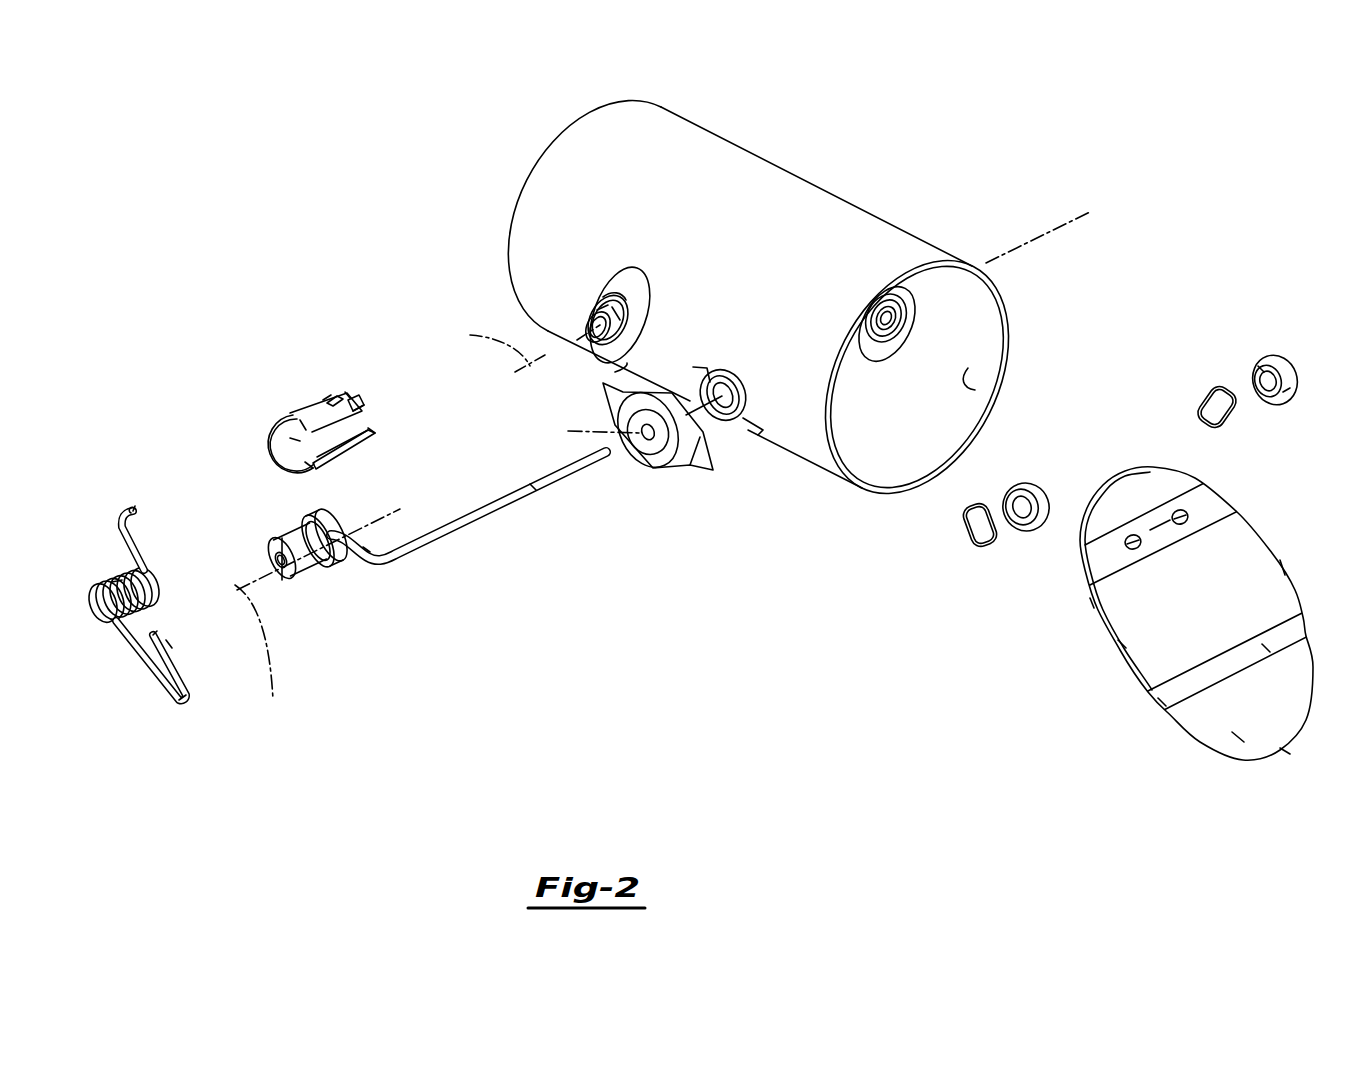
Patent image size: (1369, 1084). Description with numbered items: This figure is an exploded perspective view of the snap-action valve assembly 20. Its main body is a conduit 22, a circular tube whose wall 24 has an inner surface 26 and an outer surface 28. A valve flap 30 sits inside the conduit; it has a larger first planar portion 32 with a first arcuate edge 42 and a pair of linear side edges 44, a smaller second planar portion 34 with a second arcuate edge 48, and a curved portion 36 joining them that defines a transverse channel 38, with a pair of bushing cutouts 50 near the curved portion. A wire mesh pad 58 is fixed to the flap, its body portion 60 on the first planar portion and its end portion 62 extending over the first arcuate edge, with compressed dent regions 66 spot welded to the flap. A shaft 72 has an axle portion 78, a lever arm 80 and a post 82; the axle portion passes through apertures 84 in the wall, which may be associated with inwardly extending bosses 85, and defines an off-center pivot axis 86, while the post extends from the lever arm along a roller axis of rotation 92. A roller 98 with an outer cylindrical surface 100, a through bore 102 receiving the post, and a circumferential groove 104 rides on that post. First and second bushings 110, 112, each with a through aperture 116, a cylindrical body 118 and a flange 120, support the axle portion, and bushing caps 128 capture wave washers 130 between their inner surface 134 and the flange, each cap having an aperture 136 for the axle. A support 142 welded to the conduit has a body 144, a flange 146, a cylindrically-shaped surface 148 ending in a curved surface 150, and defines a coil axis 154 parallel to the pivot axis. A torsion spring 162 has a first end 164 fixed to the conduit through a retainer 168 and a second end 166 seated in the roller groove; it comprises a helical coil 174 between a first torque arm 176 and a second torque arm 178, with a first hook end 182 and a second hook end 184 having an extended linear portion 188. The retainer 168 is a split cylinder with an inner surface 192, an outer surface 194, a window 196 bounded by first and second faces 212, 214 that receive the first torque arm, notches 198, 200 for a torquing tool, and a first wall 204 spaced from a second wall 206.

The snap-action valve assembly 20 is at (1165, 198).
The conduit 22 is at (806, 176).
The wall 24 is at (1008, 326).
The inner surface 26 is at (972, 382).
The outer surface 28 is at (912, 244).
The valve flap 30 is at (1272, 554).
The first planar portion 32 is at (1123, 644).
The second planar portion 34 is at (1238, 737).
The curved portion 36 is at (1265, 648).
The channel 38 is at (1162, 700).
The first arcuate edge 42 is at (1093, 604).
The linear side edges 44 is at (1280, 571).
The second arcuate edge 48 is at (1286, 752).
The bushing cutouts 50 is at (1298, 613).
The pad 58 is at (1143, 471).
The body portion 60 is at (1160, 538).
The end portion 62 is at (1107, 497).
The compressed dent regions 66 is at (1140, 551).
The shaft 72 is at (444, 546).
The axle portion 78 is at (533, 487).
The lever arm 80 is at (363, 547).
The post 82 is at (277, 560).
The apertures 84 is at (878, 311).
The bosses 85 is at (902, 321).
The pivot axis 86 is at (588, 432).
The roller axis of rotation 92 is at (259, 645).
The roller 98 is at (315, 590).
The outer cylindrical surface 100 is at (330, 561).
The through bore 102 is at (287, 590).
The circumferential groove 104 is at (312, 548).
The first bushing 110 is at (1000, 489).
The second bushing 112 is at (1278, 357).
The through aperture 116 is at (1040, 492).
The body 118 is at (1262, 368).
The flange 120 is at (1283, 392).
The bushing cap 128 is at (666, 466).
The wave washers 130 is at (965, 546).
The inner surface 134 is at (742, 436).
The aperture 136 is at (642, 443).
The support 142 is at (612, 316).
The body 144 is at (615, 372).
The flange 146 is at (615, 290).
The cylindrically-shaped surface 148 is at (623, 317).
The curved surface 150 is at (597, 312).
The coil axis 154 is at (490, 344).
The torsion spring 162 is at (92, 580).
The first end 164 is at (139, 506).
The second end 166 is at (174, 646).
The retainer 168 is at (272, 420).
The helical coil 174 is at (115, 585).
The first torque arm 176 is at (140, 562).
The second torque arm 178 is at (140, 653).
The first hook end 182 is at (129, 508).
The second hook end 184 is at (184, 703).
The extended linear portion 188 is at (158, 631).
The inner surface 192 is at (300, 438).
The outer surface 194 is at (350, 398).
The window 196 is at (333, 396).
The notch 198 is at (313, 466).
The notch 200 is at (305, 420).
The first wall 204 is at (362, 415).
The second wall 206 is at (374, 435).
The first face 212 is at (323, 400).
The second face 214 is at (362, 402).